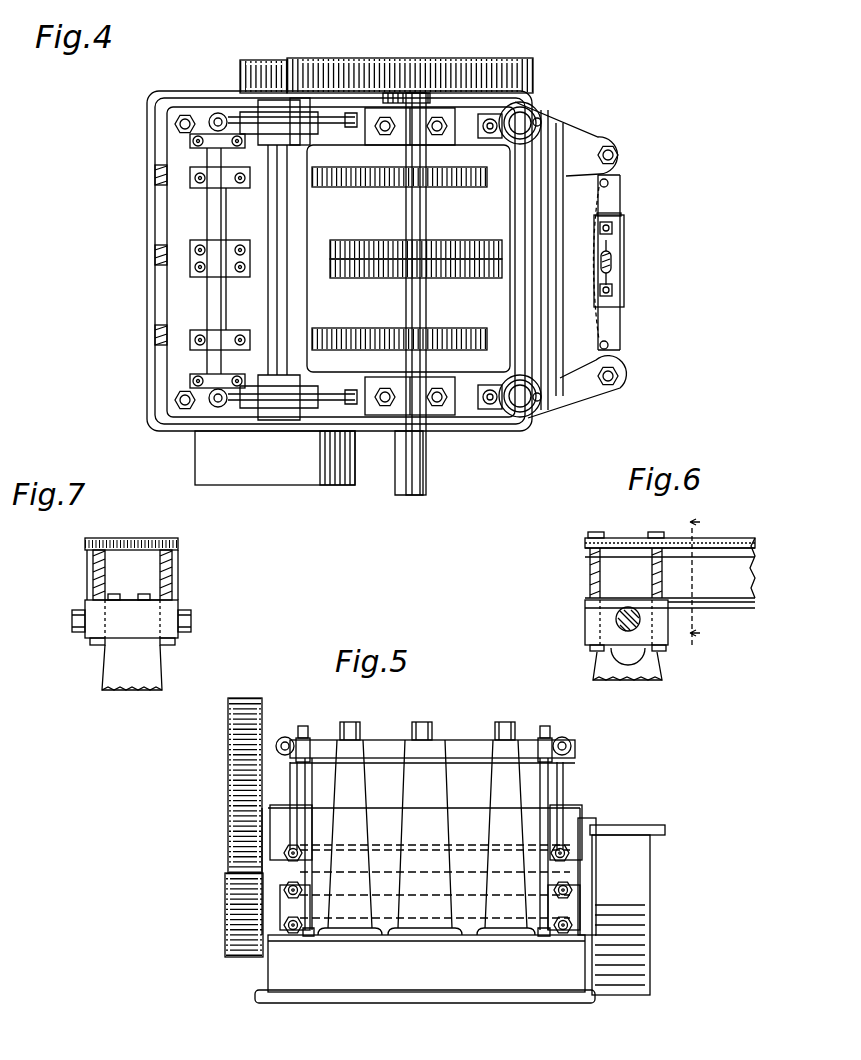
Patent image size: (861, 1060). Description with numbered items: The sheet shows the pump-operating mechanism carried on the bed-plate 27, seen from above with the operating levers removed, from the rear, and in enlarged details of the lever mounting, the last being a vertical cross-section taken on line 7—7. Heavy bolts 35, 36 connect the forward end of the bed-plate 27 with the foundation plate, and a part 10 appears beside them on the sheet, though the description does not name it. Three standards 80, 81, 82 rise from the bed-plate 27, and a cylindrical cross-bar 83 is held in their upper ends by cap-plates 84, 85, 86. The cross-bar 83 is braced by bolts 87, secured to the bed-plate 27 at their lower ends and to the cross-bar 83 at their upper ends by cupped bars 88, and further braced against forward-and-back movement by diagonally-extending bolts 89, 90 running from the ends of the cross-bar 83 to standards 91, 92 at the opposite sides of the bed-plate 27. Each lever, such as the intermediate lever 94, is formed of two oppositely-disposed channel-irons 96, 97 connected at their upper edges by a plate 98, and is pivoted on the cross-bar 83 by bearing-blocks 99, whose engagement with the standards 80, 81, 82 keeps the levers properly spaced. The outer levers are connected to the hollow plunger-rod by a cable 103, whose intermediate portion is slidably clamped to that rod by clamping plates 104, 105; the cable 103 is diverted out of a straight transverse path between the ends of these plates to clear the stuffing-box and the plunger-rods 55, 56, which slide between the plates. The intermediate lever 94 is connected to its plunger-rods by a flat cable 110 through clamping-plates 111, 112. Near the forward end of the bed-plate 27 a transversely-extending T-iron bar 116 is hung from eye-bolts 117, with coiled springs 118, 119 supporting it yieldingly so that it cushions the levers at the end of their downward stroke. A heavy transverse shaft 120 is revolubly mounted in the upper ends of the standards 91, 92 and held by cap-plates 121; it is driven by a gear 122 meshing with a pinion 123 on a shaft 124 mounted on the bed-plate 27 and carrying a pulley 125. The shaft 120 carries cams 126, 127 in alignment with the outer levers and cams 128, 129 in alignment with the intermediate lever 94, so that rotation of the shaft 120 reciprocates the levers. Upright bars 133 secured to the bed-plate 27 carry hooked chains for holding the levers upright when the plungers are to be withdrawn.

In FIG. 6, the section line 7— 7 is at (699, 584).
In FIG. 4, the lever 10 is at (620, 196).
In FIG. 4, the bed-plate 27 is at (183, 216).
In FIG. 5, the bed-plate 27 is at (425, 990).
In FIG. 4, the heavy bolt 35 is at (620, 377).
In FIG. 4, the heavy bolt 36 is at (620, 156).
In FIG. 4, the plunger-rod 55 is at (614, 290).
In FIG. 4, the plunger-rod 56 is at (614, 228).
In FIG. 5, the standard 80 is at (350, 795).
In FIG. 7, the standard 81 is at (150, 672).
In FIG. 6, the standard 81 is at (600, 657).
In FIG. 5, the standard 81 is at (434, 786).
In FIG. 5, the standard 82 is at (495, 797).
In FIG. 4, the cylindrical cross-bar 83 is at (223, 222).
In FIG. 7, the cylindrical cross-bar 83 is at (179, 614).
In FIG. 6, the cylindrical cross-bar 83 is at (628, 608).
In FIG. 5, the cylindrical cross-bar 83 is at (378, 740).
In FIG. 4, the cap-plate 84 is at (228, 188).
In FIG. 5, the cap-plate 84 is at (350, 724).
In FIG. 4, the cap-plate 85 is at (210, 272).
In FIG. 5, the cap-plate 85 is at (425, 734).
In FIG. 4, the cap-plate 86 is at (210, 332).
In FIG. 5, the cap-plate 86 is at (505, 734).
In FIG. 5, the bolt 87 is at (308, 800).
In FIG. 4, the cupped bar 88 is at (212, 138).
In FIG. 5, the cupped bar 88 is at (312, 742).
In FIG. 4, the diagonally-extending bolt 89 is at (340, 130).
In FIG. 5, the diagonally-extending bolt 89 is at (300, 795).
In FIG. 4, the diagonally-extending bolt 90 is at (325, 408).
In FIG. 5, the diagonally-extending bolt 90 is at (563, 786).
In FIG. 4, the standard 91 is at (330, 105).
In FIG. 5, the standard 91 is at (285, 870).
In FIG. 4, the standard 92 is at (470, 412).
In FIG. 5, the standard 92 is at (572, 878).
In FIG. 6, the intermediate lever 94 is at (722, 606).
In FIG. 7, the channel-iron 96 is at (106, 574).
In FIG. 6, the channel-iron 96 is at (738, 575).
In FIG. 7, the channel-iron 97 is at (152, 598).
In FIG. 7, the plate 98 is at (135, 545).
In FIG. 6, the plate 98 is at (732, 543).
In FIG. 7, the bearing-block 99 is at (85, 628).
In FIG. 6, the bearing-block 99 is at (590, 626).
In FIG. 4, the cable 103 is at (556, 282).
In FIG. 4, the clamping plate 104 is at (618, 313).
In FIG. 4, the clamping plate 105 is at (552, 212).
In FIG. 4, the flat cable 110 is at (613, 266).
In FIG. 4, the clamping-plate 111 is at (613, 258).
In FIG. 4, the clamping-plate 112 is at (620, 270).
In FIG. 4, the transversely-extending bar 116 is at (558, 150).
In FIG. 4, the eye-bolt 117 is at (540, 120).
In FIG. 4, the coiled spring 118 is at (508, 108).
In FIG. 4, the coiled spring 119 is at (505, 380).
In FIG. 4, the shaft 120 is at (427, 314).
In FIG. 5, the shaft 120 is at (460, 885).
In FIG. 4, the cap-plate 121 is at (430, 143).
In FIG. 4, the gear 122 is at (408, 72).
In FIG. 5, the gear 122 is at (240, 778).
In FIG. 4, the pinion 123 is at (256, 70).
In FIG. 5, the pinion 123 is at (240, 910).
In FIG. 4, the shaft 124 is at (274, 312).
In FIG. 5, the shaft 124 is at (378, 900).
In FIG. 4, the pulley 125 is at (222, 468).
In FIG. 5, the pulley 125 is at (650, 920).
In FIG. 4, the cam 126 is at (357, 180).
In FIG. 4, the cam 127 is at (344, 338).
In FIG. 4, the cam 128 is at (362, 246).
In FIG. 4, the cam 129 is at (370, 272).
In FIG. 4, the upright bar 133 is at (160, 175).